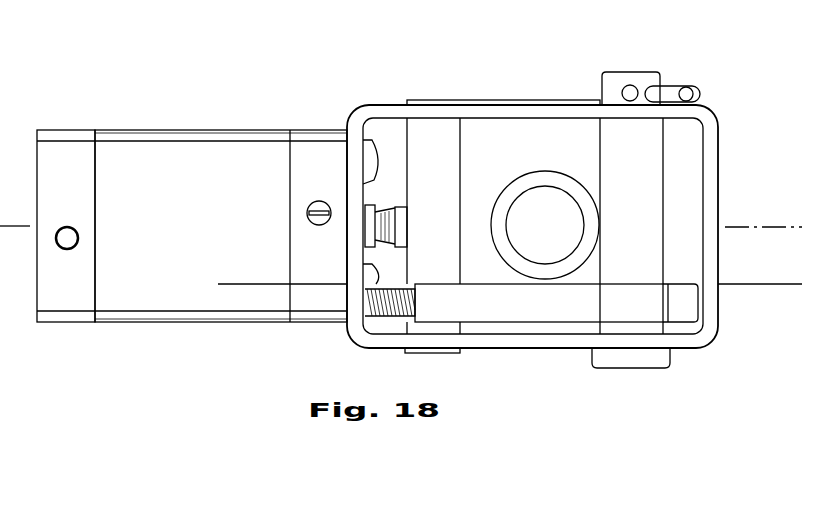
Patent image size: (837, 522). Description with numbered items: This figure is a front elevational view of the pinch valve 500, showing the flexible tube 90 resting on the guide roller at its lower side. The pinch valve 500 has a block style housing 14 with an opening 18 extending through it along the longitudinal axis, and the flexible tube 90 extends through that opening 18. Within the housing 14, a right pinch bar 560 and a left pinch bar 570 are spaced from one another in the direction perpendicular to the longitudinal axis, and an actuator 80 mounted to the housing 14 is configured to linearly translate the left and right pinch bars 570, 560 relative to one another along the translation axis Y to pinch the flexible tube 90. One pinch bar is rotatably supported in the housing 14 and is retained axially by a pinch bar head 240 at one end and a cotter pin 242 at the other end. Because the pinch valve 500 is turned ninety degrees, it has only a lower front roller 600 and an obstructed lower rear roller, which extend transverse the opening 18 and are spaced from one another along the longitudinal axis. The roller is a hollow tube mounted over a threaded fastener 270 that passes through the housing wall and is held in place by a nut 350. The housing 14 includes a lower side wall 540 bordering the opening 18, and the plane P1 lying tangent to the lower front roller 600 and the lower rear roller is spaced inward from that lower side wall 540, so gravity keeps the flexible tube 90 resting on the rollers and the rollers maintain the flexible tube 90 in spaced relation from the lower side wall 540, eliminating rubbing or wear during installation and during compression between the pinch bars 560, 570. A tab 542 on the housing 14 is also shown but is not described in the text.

The pinch valve 500 is at (115, 108).
The actuator 80 is at (164, 130).
The upper tab 542 is at (397, 107).
The opening 18 is at (522, 148).
The flexible tube 90 is at (552, 178).
The cotter pin 242 is at (686, 93).
The housing 14 is at (529, 220).
The left pinch bar 570 is at (407, 189).
The right pinch bar 560 is at (663, 257).
The threaded fastener 270 is at (383, 305).
The lower side wall 540 is at (495, 340).
The lower front roller 600 is at (561, 310).
The lower pinch bar head 240 is at (665, 355).
The nut 350 is at (718, 340).
The plane P1 is at (250, 284).
The translation axis Y is at (785, 225).